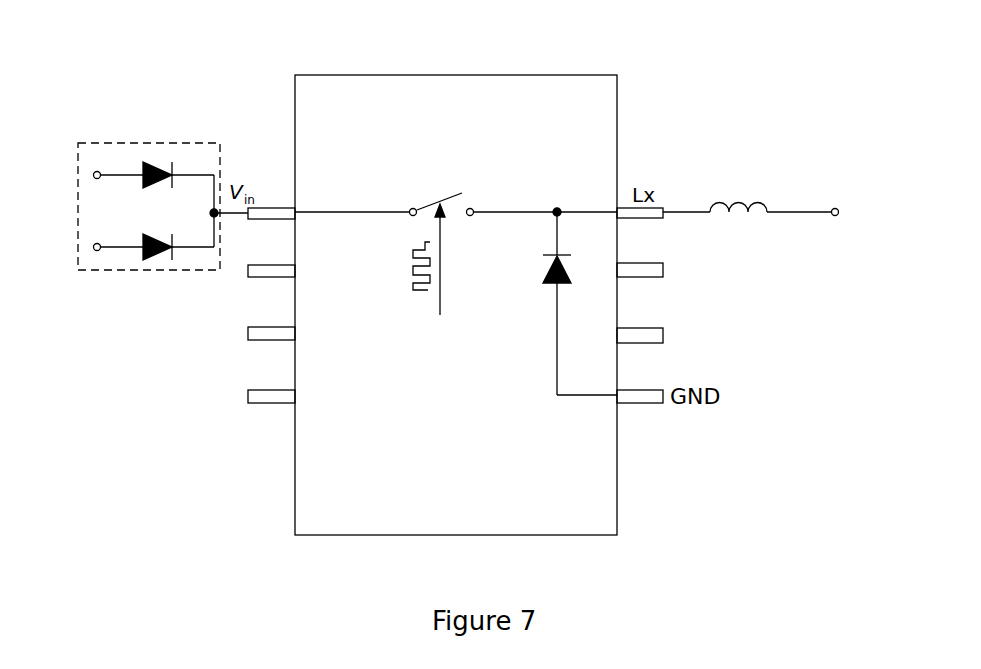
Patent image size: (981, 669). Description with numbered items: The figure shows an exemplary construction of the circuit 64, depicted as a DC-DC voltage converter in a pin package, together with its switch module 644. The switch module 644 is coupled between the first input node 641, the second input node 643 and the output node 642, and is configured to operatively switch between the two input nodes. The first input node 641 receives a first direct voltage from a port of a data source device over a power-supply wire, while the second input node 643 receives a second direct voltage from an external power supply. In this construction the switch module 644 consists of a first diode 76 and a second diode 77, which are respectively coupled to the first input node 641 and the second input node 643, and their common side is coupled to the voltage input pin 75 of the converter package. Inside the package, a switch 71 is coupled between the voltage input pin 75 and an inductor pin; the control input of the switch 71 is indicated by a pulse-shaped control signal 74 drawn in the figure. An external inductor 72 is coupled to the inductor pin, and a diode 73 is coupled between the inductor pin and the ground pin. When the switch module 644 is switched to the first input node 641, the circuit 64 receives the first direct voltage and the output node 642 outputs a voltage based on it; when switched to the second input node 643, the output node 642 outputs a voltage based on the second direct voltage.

The circuit 64 is at (126, 58).
The switch module 644 is at (92, 145).
The first input node 641 is at (99, 171).
The second input node 643 is at (100, 252).
The output node 642 is at (838, 208).
The first diode 76 is at (157, 167).
The second diode 77 is at (157, 258).
The voltage input pin 75 is at (290, 207).
The switch 71 is at (457, 193).
The control signal 74 is at (412, 260).
The diode 73 is at (570, 285).
The external inductor 72 is at (717, 203).